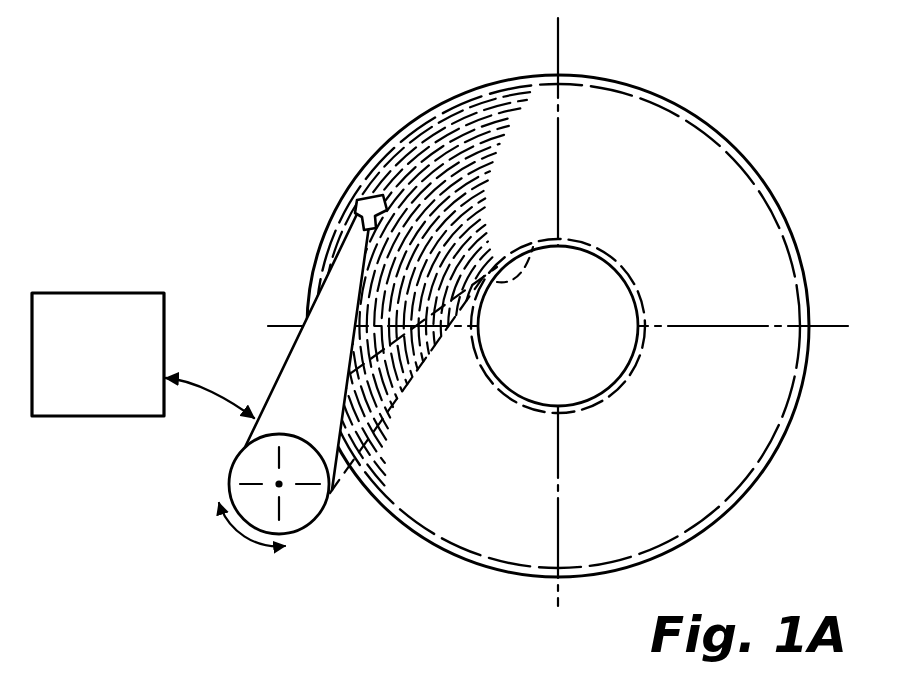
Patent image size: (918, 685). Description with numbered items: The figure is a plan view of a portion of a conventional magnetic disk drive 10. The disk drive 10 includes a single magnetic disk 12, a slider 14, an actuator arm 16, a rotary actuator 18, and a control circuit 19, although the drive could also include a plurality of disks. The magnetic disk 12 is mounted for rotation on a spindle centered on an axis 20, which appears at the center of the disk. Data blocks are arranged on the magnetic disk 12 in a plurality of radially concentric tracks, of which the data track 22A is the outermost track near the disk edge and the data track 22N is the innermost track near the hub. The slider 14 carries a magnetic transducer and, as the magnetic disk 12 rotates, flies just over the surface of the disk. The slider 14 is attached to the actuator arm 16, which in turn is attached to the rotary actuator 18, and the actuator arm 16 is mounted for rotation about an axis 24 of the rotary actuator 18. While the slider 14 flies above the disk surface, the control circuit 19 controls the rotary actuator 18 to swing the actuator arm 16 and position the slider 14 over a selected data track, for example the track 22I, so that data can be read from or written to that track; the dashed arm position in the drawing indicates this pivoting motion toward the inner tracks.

The magnetic disk drive 10 is at (778, 140).
The magnetic disk 12 is at (767, 470).
The slider 14 is at (353, 203).
The actuator arm 16 is at (285, 380).
The rotary actuator 18 is at (236, 470).
The control circuit 19 is at (113, 401).
The axis 20 is at (558, 326).
The outermost data track 22A is at (666, 107).
The selected data track 22I is at (512, 115).
The innermost data track 22N is at (600, 247).
The axis of rotary actuator 24 is at (280, 485).